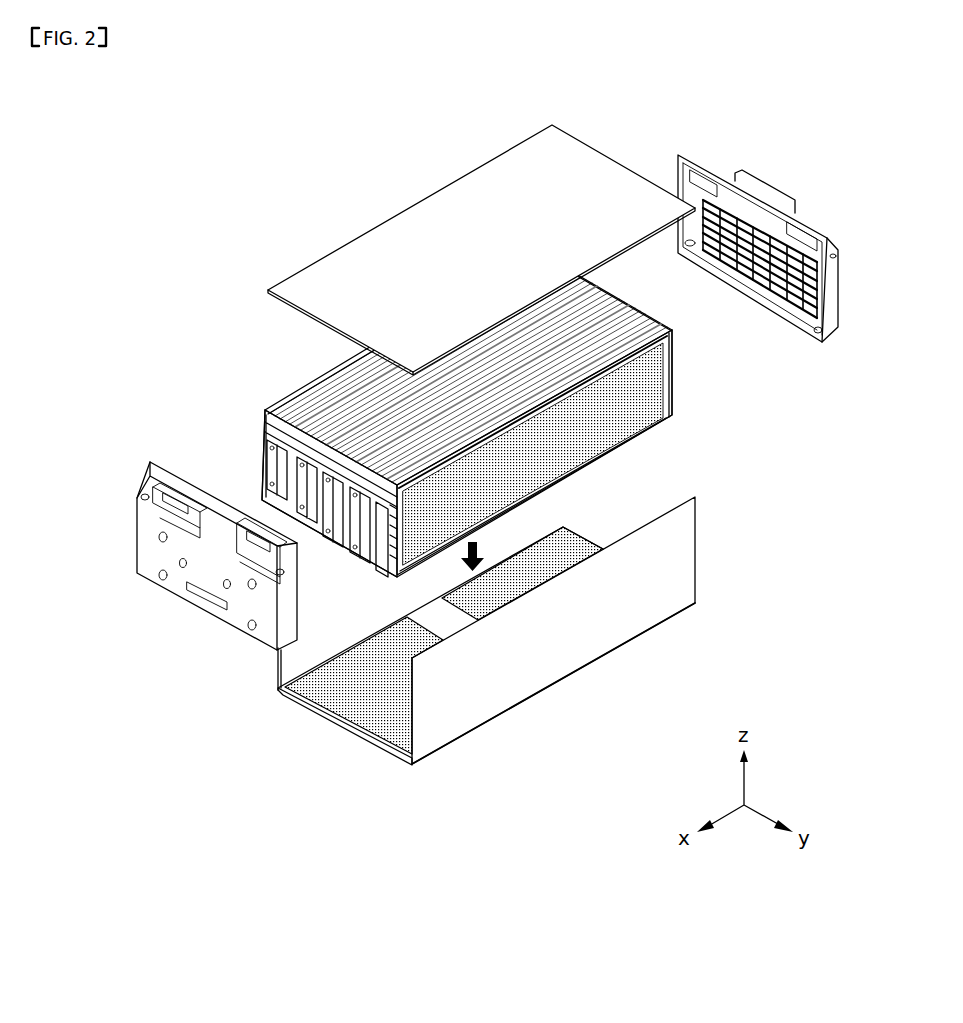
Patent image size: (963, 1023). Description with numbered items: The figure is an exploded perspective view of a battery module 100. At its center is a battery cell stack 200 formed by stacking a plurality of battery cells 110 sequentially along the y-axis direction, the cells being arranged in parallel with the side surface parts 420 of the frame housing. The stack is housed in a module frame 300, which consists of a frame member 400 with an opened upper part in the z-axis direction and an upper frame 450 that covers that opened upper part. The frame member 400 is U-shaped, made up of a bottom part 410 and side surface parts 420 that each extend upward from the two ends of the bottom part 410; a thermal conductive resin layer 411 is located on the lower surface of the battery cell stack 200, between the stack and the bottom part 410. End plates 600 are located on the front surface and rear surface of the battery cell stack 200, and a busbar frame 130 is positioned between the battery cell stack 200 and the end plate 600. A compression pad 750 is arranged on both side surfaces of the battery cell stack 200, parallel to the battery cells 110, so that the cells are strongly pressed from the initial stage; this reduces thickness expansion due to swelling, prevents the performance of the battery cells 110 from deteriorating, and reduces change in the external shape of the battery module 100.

The battery module 100 is at (346, 105).
The battery cell 110 is at (367, 407).
The busbar frame 130 is at (243, 431).
The battery cell stack 200 is at (425, 380).
The module frame 300 is at (531, 445).
The frame member 400 is at (504, 619).
The bottom part 410 is at (337, 718).
The thermal conductive resin layer 411 is at (413, 645).
The side surface part 420 is at (615, 618).
The upper frame 450 is at (597, 240).
The end plate 600 is at (805, 218).
The compression pad 750 is at (615, 413).